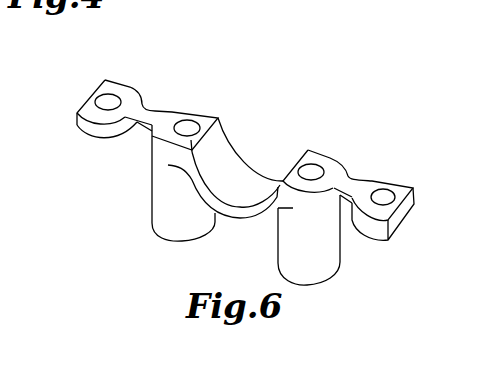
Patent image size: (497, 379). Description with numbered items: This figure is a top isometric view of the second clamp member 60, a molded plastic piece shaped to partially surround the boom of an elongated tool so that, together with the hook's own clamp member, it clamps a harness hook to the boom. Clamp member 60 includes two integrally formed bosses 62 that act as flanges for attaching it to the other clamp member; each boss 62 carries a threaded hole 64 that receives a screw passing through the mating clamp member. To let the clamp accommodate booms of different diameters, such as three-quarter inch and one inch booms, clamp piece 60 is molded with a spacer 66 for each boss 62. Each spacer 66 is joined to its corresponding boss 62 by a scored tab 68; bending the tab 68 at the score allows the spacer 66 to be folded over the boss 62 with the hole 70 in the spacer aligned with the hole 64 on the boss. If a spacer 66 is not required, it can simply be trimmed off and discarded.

The clamp member 60 is at (231, 219).
The bosses 62 is at (193, 226).
The holes 64 is at (188, 124).
The spacer 66 is at (85, 128).
The scored tab 68 is at (149, 108).
The hole 70 is at (108, 98).